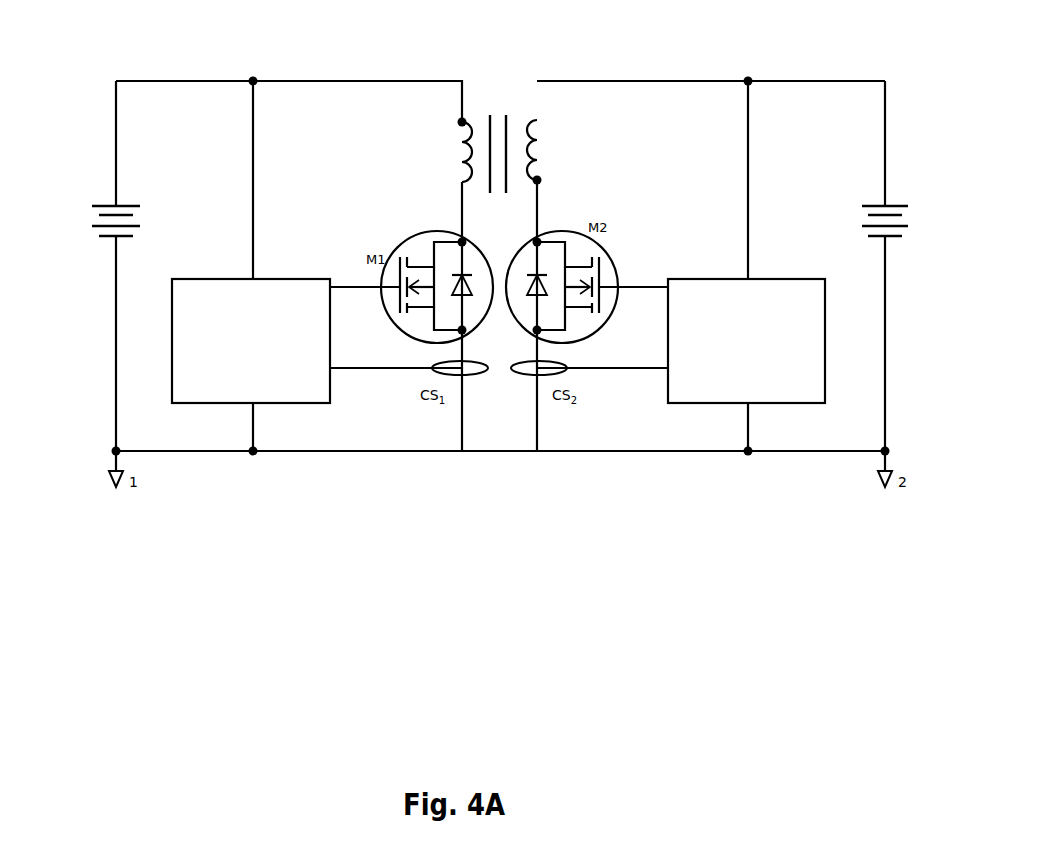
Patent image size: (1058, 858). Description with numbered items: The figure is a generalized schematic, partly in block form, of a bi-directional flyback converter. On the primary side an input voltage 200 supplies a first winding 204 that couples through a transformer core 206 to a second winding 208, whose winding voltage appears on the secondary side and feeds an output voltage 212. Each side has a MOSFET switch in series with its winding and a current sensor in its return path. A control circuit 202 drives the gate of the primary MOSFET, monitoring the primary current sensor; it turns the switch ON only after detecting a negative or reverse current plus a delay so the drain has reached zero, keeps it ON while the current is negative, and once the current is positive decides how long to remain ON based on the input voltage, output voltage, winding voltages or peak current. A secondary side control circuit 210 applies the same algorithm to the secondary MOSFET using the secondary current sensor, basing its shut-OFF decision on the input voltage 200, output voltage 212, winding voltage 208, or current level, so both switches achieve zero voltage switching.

The input voltage 200 is at (92, 200).
The control circuit 202 is at (243, 278).
The first inductor winding L1 204 is at (452, 162).
The transformer core 206 is at (502, 110).
The winding voltage 208 is at (548, 144).
The secondary side control circuit 210 is at (766, 278).
The output voltage 212 is at (912, 240).